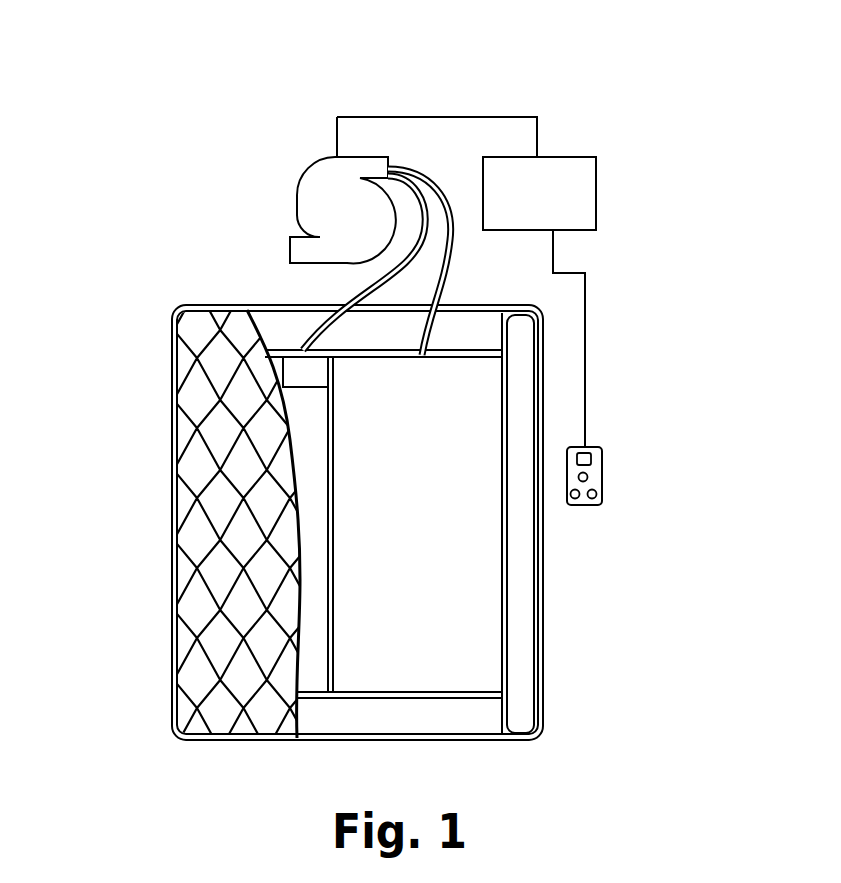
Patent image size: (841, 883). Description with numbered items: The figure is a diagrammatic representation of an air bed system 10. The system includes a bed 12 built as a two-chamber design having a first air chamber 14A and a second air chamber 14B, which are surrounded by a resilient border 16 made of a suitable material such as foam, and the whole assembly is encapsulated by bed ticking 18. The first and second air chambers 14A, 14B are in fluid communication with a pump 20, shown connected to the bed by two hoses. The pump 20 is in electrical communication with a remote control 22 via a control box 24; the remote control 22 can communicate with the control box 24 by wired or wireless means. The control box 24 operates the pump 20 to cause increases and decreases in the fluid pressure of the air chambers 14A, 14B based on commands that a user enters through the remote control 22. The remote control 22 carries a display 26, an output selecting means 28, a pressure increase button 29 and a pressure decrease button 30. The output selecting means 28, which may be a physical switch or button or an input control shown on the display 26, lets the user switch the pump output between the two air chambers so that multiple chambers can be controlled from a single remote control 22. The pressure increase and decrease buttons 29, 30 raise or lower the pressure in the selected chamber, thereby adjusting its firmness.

The air bed system 10 is at (266, 74).
The bed 12 is at (141, 588).
The first air chamber 14A is at (305, 372).
The second air chamber 14B is at (383, 524).
The resilient border 16 is at (524, 598).
The bed ticking 18 is at (190, 531).
The pump 20 is at (307, 187).
The remote control 22 is at (603, 490).
The control box 24 is at (562, 157).
The display 26 is at (592, 459).
The output selecting means 28 is at (590, 478).
The pressure increase button 29 is at (575, 506).
The pressure decrease button 30 is at (593, 505).